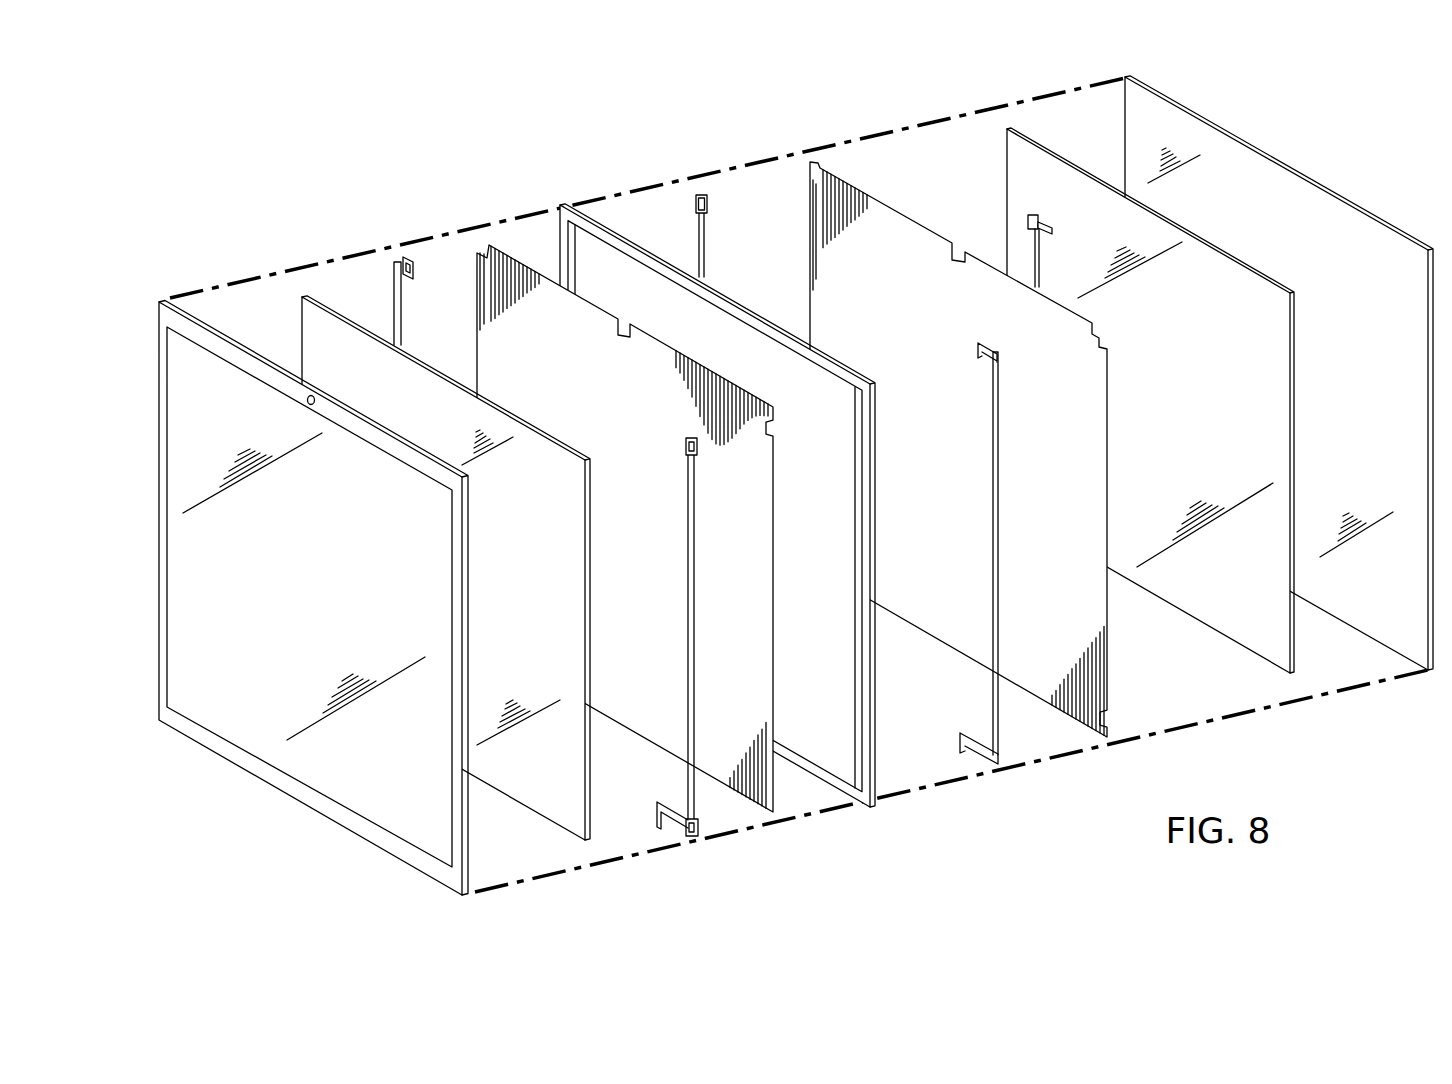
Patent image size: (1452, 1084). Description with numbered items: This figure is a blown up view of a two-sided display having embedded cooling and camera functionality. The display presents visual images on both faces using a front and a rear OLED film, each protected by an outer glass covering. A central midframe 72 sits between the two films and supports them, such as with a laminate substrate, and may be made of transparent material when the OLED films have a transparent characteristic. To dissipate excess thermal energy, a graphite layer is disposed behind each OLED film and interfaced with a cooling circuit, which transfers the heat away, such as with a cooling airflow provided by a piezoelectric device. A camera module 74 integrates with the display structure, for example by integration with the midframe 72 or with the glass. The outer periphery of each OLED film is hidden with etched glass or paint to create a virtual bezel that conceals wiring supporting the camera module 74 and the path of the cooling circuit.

The midframe 72 is at (563, 208).
The camera module 74 is at (1028, 222).